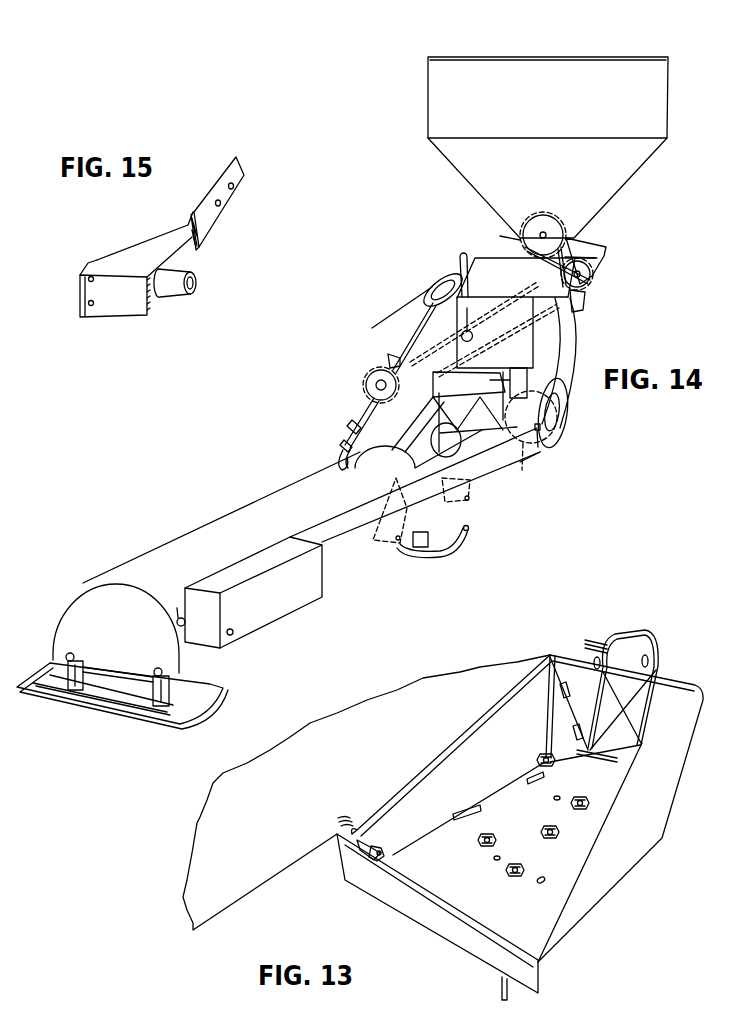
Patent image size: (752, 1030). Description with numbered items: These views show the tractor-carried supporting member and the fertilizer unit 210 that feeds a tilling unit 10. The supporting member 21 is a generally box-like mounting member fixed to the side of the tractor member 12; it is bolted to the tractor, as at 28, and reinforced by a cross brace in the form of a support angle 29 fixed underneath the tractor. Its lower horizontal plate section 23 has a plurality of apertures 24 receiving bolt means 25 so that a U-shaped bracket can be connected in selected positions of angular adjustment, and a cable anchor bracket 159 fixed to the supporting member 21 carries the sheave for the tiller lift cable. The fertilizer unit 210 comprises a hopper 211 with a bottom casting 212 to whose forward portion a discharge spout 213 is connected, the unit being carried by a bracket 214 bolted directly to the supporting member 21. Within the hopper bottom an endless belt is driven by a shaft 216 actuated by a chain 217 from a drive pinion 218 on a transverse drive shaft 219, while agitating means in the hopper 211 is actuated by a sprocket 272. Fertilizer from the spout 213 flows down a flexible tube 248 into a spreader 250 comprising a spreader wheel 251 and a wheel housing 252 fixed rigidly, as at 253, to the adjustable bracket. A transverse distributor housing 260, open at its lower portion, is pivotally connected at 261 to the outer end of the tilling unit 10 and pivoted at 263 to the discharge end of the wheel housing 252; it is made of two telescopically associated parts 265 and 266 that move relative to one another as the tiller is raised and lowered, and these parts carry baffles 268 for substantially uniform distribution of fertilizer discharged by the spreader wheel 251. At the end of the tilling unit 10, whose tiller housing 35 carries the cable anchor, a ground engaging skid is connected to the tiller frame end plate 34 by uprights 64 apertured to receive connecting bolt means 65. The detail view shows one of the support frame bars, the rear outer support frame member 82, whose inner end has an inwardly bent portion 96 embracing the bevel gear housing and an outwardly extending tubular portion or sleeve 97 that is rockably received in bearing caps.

In FIG. 14, the tilling unit 10 is at (115, 562).
In FIG. 13, the tractor member 12 is at (440, 668).
In FIG. 14, the supporting member 21 is at (533, 333).
In FIG. 13, the supporting member 21 is at (658, 843).
In FIG. 13, the lower horizontal plate section 23 is at (447, 835).
In FIG. 13, the apertures 24 is at (556, 796).
In FIG. 13, the bolt means 25 is at (518, 863).
In FIG. 13, the bolts 28 is at (385, 853).
In FIG. 13, the support angle 29 is at (345, 895).
In FIG. 14, the tiller frame end plate 34 is at (58, 632).
In FIG. 14, the tiller housing 35 is at (250, 506).
In FIG. 14, the uprights 64 is at (65, 689).
In FIG. 14, the connecting bolt means 65 is at (155, 671).
In FIG. 15, the rear outer support frame member 82 is at (162, 251).
In FIG. 15, the inwardly bent portions 96 is at (121, 301).
In FIG. 15, the tubular portion or sleeve 97 is at (178, 283).
In FIG. 13, the cable anchor bracket 159 is at (588, 645).
In FIG. 14, the fertilizer unit 210 is at (569, 126).
In FIG. 14, the hopper 211 is at (664, 106).
In FIG. 14, the bottom casting 212 is at (520, 236).
In FIG. 14, the discharge spout 213 is at (603, 258).
In FIG. 14, the bracket 214 is at (508, 272).
In FIG. 14, the shaft 216 is at (586, 284).
In FIG. 14, the chain 217 is at (562, 305).
In FIG. 14, the drive pinion 218 is at (381, 372).
In FIG. 14, the drive shaft 219 is at (366, 392).
In FIG. 14, the flexible tube 248 is at (580, 334).
In FIG. 14, the spreader 250 is at (567, 412).
In FIG. 14, the spreader wheel 251 is at (523, 458).
In FIG. 14, the wheel housing 252 is at (563, 429).
In FIG. 14, the fixing connection 253 is at (523, 374).
In FIG. 14, the transverse distributor housing 260 is at (380, 563).
In FIG. 14, the pivotal connection 261 is at (178, 614).
In FIG. 14, the pivot 263 is at (542, 448).
In FIG. 14, the housing part 265 is at (490, 487).
In FIG. 14, the housing part 266 is at (292, 608).
In FIG. 14, the baffles 268 is at (410, 478).
In FIG. 14, the sprocket 272 is at (549, 222).